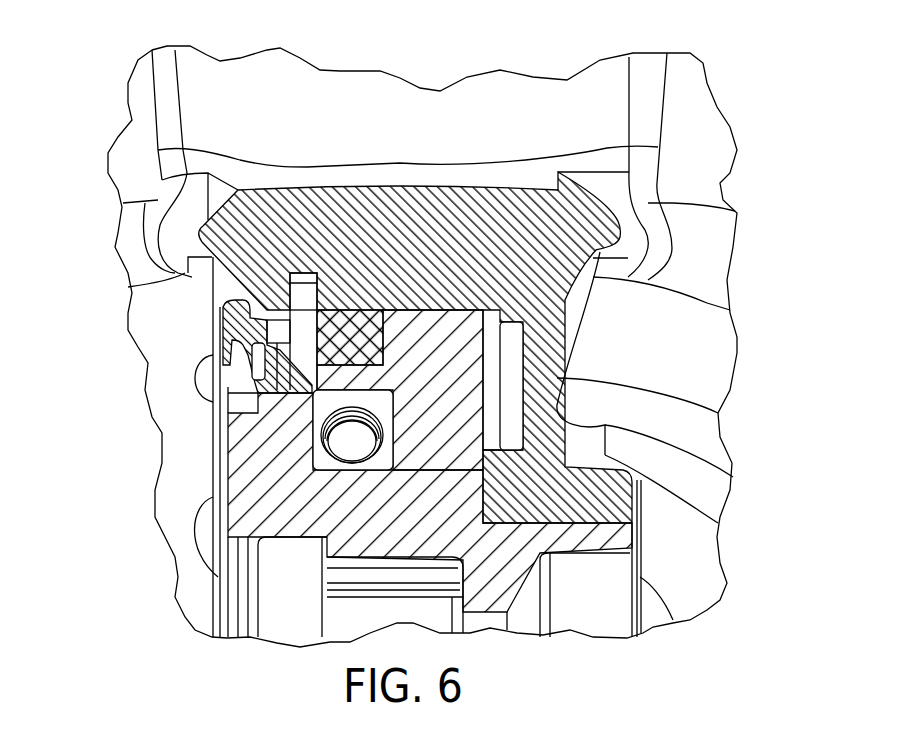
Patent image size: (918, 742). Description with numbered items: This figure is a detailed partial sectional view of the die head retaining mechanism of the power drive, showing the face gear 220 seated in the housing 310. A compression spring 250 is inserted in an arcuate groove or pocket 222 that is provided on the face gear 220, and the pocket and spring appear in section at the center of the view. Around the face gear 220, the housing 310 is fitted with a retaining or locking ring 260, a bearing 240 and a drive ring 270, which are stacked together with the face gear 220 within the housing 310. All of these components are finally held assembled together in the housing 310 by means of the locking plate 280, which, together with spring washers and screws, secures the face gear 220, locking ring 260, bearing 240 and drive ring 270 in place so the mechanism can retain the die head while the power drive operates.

The housing 310 is at (477, 217).
The retaining or locking ring 260 is at (305, 297).
The bearing 240 is at (343, 318).
The face gear 220 is at (447, 387).
The arcuate groove or pocket 222 is at (390, 400).
The compression spring 250 is at (330, 460).
The drive ring 270 is at (220, 397).
The locking plate 280 is at (228, 463).